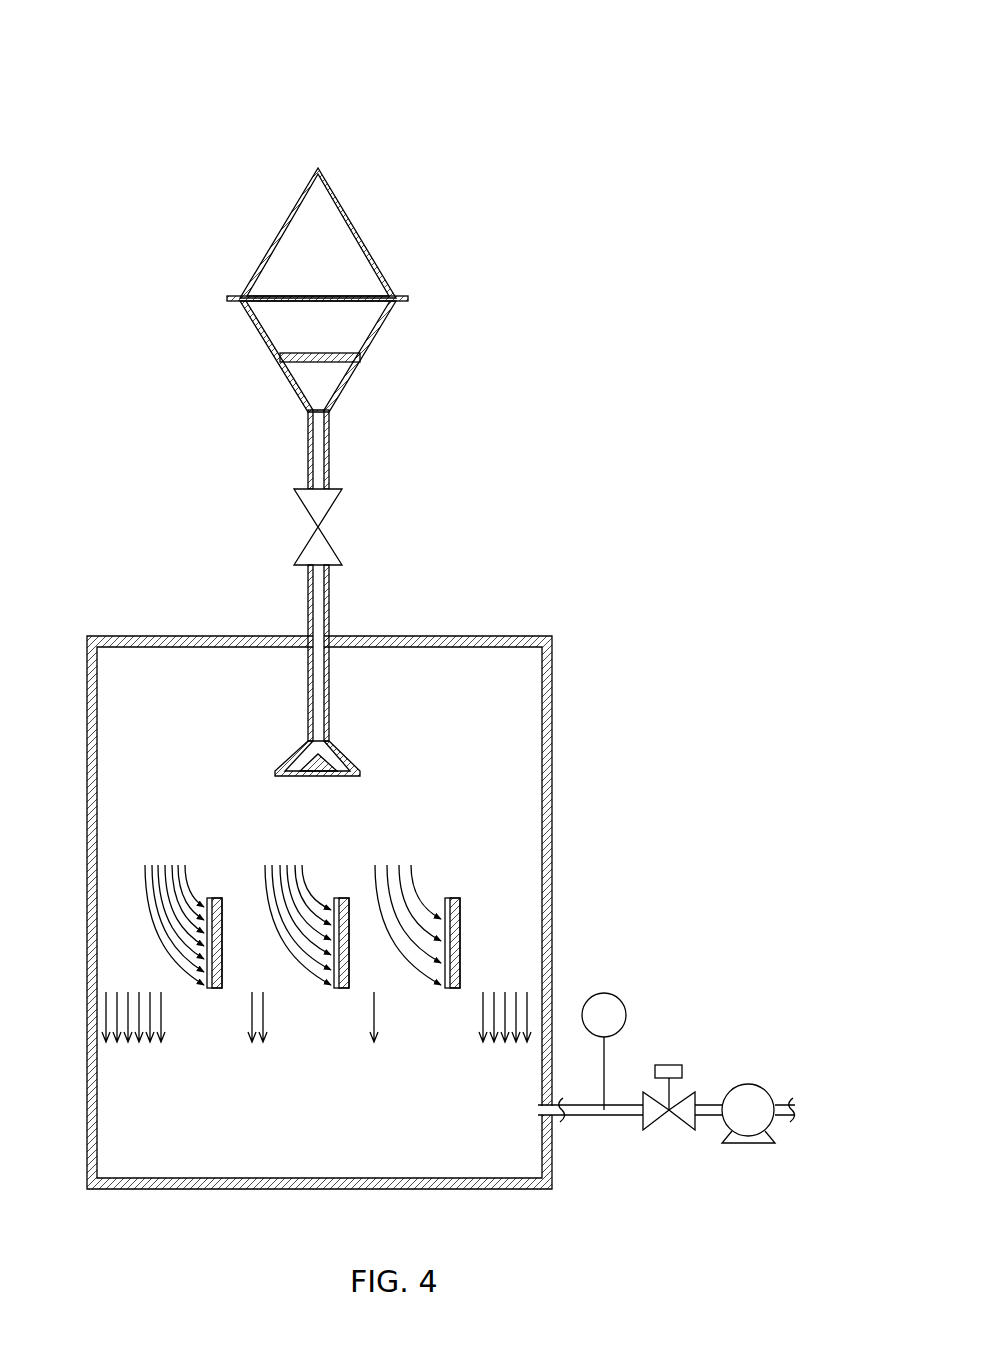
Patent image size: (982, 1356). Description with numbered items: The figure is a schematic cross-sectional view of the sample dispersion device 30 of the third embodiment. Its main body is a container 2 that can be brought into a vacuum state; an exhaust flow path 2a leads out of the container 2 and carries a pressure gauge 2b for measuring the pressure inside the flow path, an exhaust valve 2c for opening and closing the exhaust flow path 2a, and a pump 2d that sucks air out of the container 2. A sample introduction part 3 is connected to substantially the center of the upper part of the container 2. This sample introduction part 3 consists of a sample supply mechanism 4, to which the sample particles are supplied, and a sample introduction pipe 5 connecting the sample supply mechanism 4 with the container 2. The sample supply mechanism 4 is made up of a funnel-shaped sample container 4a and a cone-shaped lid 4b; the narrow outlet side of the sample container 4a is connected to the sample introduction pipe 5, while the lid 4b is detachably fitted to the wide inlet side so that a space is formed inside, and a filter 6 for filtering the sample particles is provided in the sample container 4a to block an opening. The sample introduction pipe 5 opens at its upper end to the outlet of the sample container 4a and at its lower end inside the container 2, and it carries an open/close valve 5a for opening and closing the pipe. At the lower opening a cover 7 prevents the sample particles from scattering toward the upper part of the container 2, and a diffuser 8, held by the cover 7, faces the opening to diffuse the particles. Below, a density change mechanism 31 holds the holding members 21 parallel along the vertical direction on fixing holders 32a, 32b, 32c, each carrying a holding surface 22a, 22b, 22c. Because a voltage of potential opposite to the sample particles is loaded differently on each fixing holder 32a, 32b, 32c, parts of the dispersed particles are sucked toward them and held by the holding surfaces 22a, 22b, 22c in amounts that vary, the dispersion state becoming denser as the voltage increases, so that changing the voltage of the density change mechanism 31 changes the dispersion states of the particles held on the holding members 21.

The sample dispersion device 30 is at (534, 148).
The sample introduction part 3 is at (422, 190).
The sample supply mechanism 4 is at (255, 207).
The sample container 4a is at (270, 348).
The lid 4b is at (353, 232).
The filter 6 is at (318, 353).
The sample introduction pipe 5 is at (330, 470).
The open/close valve 5a is at (298, 497).
The container 2 is at (197, 636).
The cover 7 is at (296, 757).
The diffuser 8 is at (318, 782).
The density change mechanism 31 is at (193, 810).
The holding members 21 is at (480, 903).
The fixing holder 32a is at (213, 898).
The fixing holder 32b is at (340, 898).
The fixing holder 32c is at (450, 898).
The holding surface 22a is at (210, 988).
The holding surface 22b is at (336, 988).
The holding surface 22c is at (446, 988).
The exhaust flow path 2a is at (628, 1118).
The pressure gauge 2b is at (604, 993).
The exhaust valve 2c is at (670, 1065).
The pump 2d is at (745, 1085).